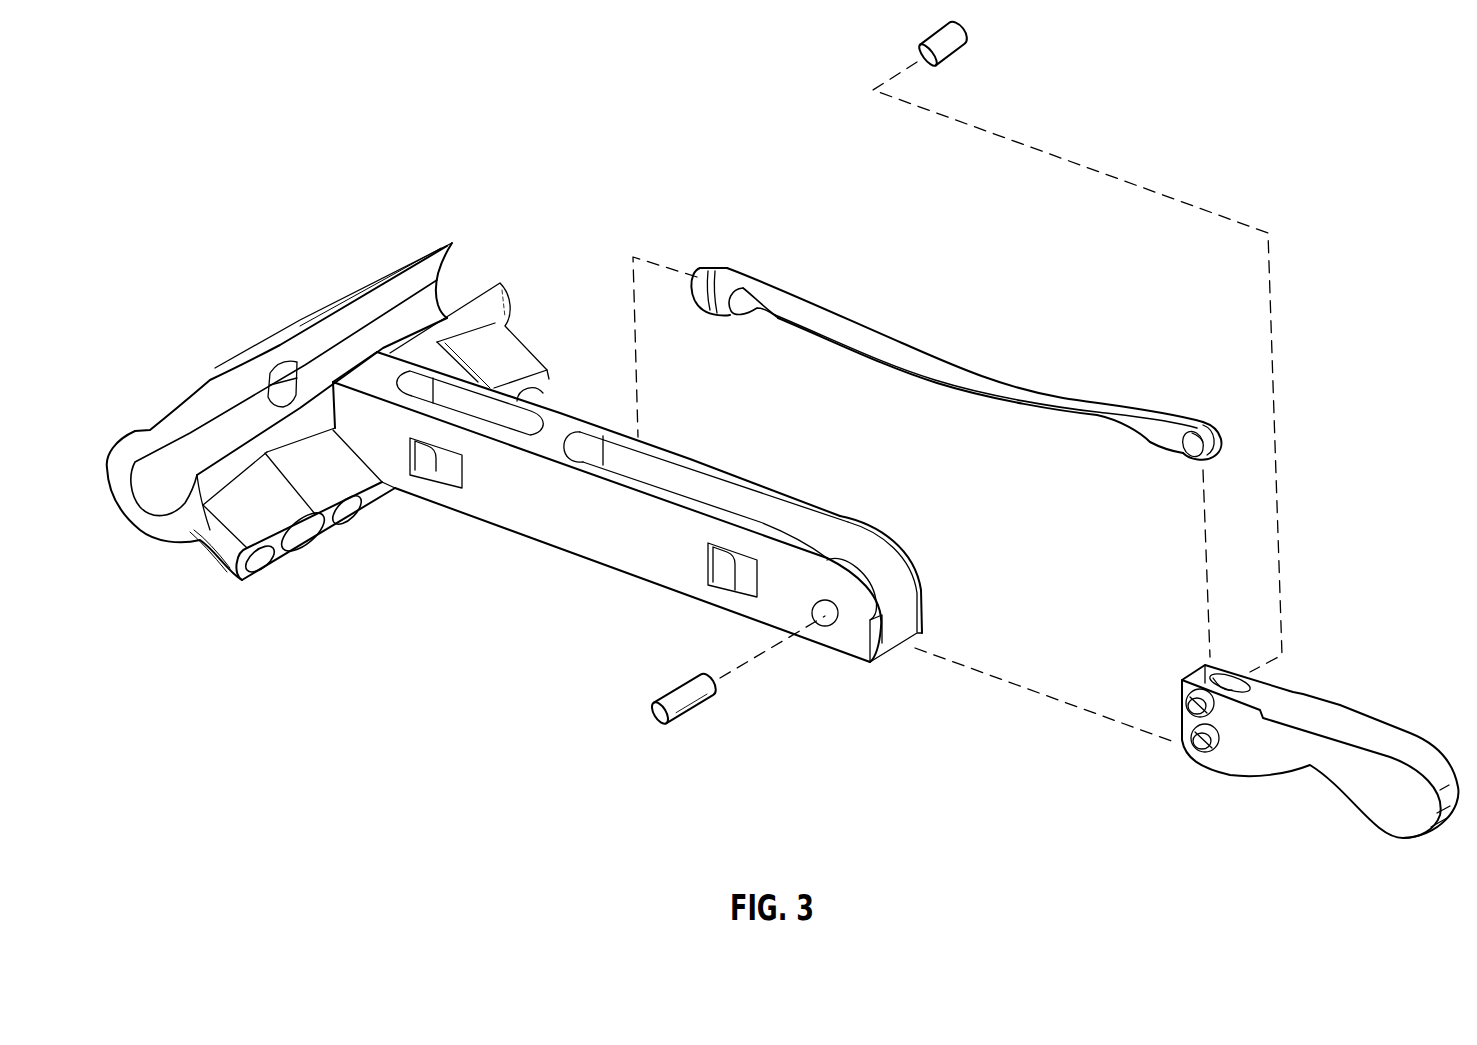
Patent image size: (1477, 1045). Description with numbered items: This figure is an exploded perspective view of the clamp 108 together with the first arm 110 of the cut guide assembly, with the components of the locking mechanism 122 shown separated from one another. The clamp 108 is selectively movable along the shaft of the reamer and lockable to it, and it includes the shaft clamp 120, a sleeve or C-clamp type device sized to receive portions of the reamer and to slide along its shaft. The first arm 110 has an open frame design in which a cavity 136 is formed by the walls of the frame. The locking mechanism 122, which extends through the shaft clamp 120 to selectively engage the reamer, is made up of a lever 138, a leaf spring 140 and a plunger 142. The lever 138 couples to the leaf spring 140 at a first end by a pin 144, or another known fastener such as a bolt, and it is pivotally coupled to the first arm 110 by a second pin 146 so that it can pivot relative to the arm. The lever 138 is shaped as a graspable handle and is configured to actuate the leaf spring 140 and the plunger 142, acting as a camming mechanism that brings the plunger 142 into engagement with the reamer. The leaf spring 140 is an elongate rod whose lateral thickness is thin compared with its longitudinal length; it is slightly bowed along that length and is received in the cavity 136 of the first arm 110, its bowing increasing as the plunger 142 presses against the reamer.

The clamp 108 is at (455, 132).
The first arm 110 is at (537, 510).
The shaft clamp 120 is at (282, 342).
The locking mechanism 122 is at (1372, 480).
The cavity 136 is at (885, 556).
The lever 138 is at (1315, 762).
The leaf spring 140 is at (942, 373).
The plunger 142 is at (710, 268).
The pin 144 is at (953, 50).
The second pin 146 is at (688, 692).